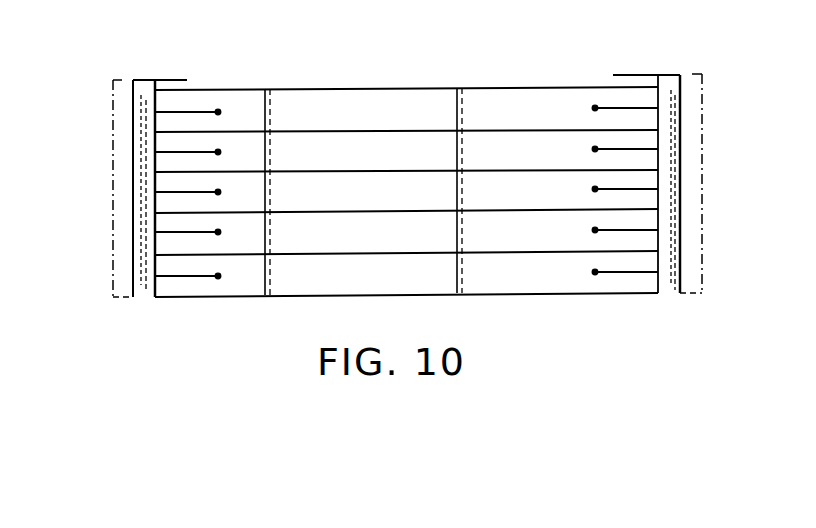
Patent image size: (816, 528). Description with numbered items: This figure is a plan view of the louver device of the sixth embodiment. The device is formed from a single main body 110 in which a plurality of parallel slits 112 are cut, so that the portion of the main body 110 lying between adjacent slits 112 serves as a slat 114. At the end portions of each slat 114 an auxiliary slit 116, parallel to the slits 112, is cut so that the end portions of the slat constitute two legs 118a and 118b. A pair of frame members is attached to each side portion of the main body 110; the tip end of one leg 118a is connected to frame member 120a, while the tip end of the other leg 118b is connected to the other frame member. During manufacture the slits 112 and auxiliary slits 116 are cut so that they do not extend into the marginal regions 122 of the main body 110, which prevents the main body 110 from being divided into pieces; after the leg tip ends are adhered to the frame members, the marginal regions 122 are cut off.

The main body 110 is at (445, 74).
The slits 112 is at (320, 170).
The slat 114 is at (475, 192).
The auxiliary slit 116 is at (183, 213).
The leg 118a is at (185, 102).
The leg 118b is at (205, 120).
The frame member 120a is at (150, 240).
The marginal regions 122 is at (113, 150).